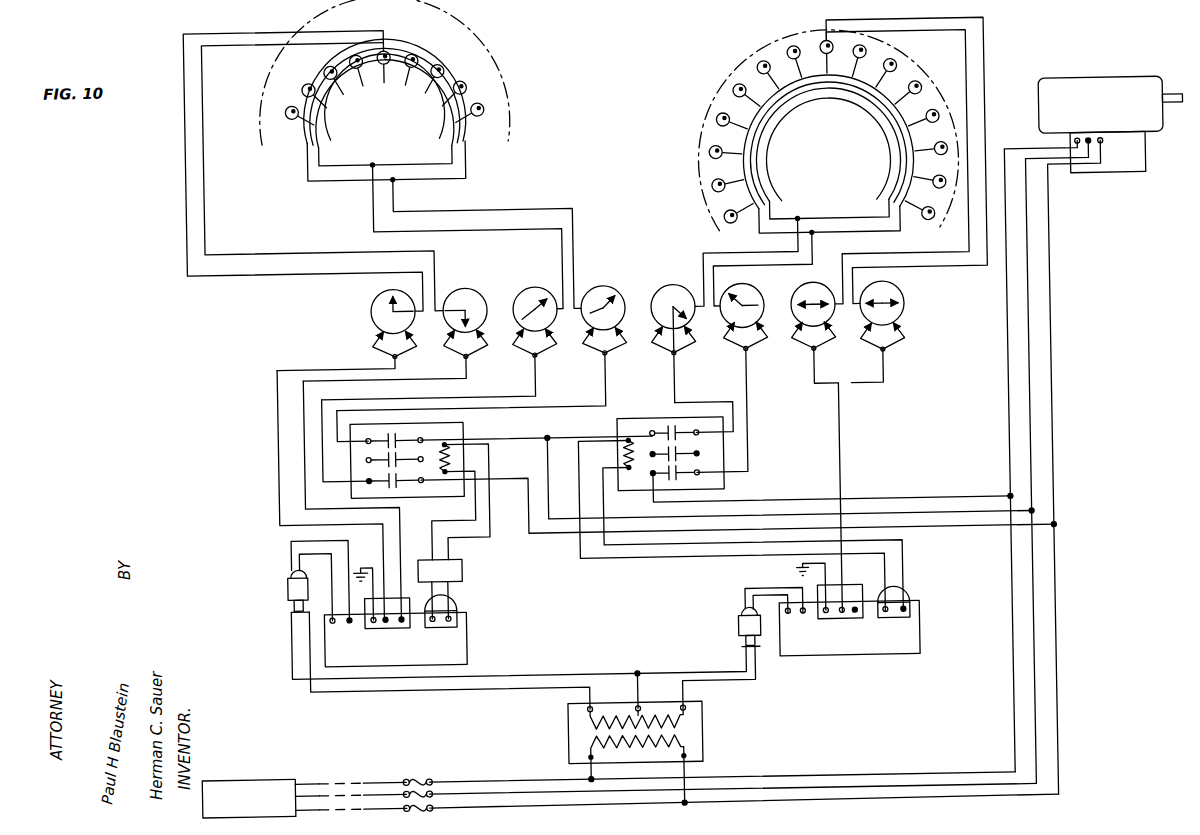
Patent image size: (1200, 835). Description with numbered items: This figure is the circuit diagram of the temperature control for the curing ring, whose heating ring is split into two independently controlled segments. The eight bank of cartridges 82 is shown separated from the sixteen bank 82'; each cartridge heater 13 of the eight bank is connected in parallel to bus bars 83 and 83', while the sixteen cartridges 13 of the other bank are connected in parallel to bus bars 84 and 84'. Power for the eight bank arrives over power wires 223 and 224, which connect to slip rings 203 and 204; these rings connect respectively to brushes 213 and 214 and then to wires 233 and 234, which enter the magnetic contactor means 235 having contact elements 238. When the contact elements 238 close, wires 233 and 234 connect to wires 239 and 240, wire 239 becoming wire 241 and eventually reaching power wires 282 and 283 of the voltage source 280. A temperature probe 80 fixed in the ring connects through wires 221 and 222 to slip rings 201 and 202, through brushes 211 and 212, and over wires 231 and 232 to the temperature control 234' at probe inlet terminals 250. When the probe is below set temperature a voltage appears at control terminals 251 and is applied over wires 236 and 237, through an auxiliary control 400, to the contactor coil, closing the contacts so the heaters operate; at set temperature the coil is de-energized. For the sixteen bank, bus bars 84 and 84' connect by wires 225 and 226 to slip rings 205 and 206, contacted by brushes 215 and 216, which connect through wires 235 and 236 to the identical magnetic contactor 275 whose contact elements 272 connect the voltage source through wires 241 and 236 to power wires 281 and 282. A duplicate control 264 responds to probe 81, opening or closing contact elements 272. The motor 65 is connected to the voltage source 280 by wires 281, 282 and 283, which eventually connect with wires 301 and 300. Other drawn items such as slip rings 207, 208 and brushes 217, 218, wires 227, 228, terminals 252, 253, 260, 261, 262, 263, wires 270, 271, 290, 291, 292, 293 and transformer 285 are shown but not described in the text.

The cartridge heaters 13 is at (470, 84).
The motor 65 is at (1098, 90).
The temperature probe 80 is at (398, 52).
The temperature probe 81 is at (826, 45).
The eight bank of cartridges 82 is at (384, 72).
The sixteen bank of cartridges 82' is at (827, 129).
The bus bar 83 is at (368, 110).
The bus bar 83' is at (385, 109).
The bus bar 84 is at (828, 154).
The bus bar 84' is at (828, 153).
The slip ring 201 is at (374, 298).
The slip ring 202 is at (472, 292).
The slip ring 203 is at (520, 290).
The slip ring 204 is at (590, 292).
The slip ring 205 is at (660, 292).
The slip ring 206 is at (748, 292).
The meter 207 is at (838, 283).
The meter 208 is at (898, 292).
The brush 211 is at (380, 345).
The brush 212 is at (469, 356).
The brush 213 is at (538, 357).
The brush 214 is at (608, 355).
The brush 215 is at (678, 356).
The brush 216 is at (749, 356).
The meter coil lead 217 is at (817, 357).
The meter coil lead 218 is at (889, 358).
The wire 221 is at (190, 160).
The wire 222 is at (284, 248).
The power wire 223 is at (486, 208).
The power wire 224 is at (480, 228).
The wire 225 is at (706, 258).
The wire 226 is at (815, 247).
The conductor 227 is at (955, 262).
The conductor 228 is at (950, 276).
The wire 231 is at (278, 478).
The wire 232 is at (304, 500).
The wire 233 is at (476, 395).
The wire 234 is at (463, 415).
The temperature control 234' is at (418, 639).
The magnetic contactor means 235 is at (690, 404).
The wire 236 is at (752, 404).
The wire 237 is at (839, 428).
The contact elements 238 is at (398, 436).
The wire 239 is at (496, 437).
The wire 240 is at (497, 477).
The wire 241 is at (546, 447).
The probe inlet terminals 250 is at (366, 624).
The control terminals 251 is at (426, 624).
The terminals 252 is at (337, 621).
The indicator lamp 253 is at (284, 588).
The terminal strip 260 is at (830, 624).
The relay 261 is at (908, 624).
The terminals 262 is at (788, 621).
The indicator lamp 263 is at (735, 628).
The duplicate control 264 is at (916, 642).
The conductor 270 is at (578, 486).
The resistor / conductor 271 is at (602, 470).
The contact elements 272 is at (670, 438).
The magnetic contactor 275 is at (722, 491).
The voltage source 280 is at (249, 787).
The power wire 281 is at (395, 778).
The power wire 282 is at (357, 790).
The power wire 283 is at (341, 805).
The transformer 285 is at (697, 730).
The conductor 290 is at (486, 687).
The conductor 291 is at (532, 674).
The conductor 292 is at (751, 680).
The conductor 293 is at (640, 674).
The wire 300 is at (1009, 158).
The wire 301 is at (1038, 160).
The auxiliary control 400 is at (462, 576).